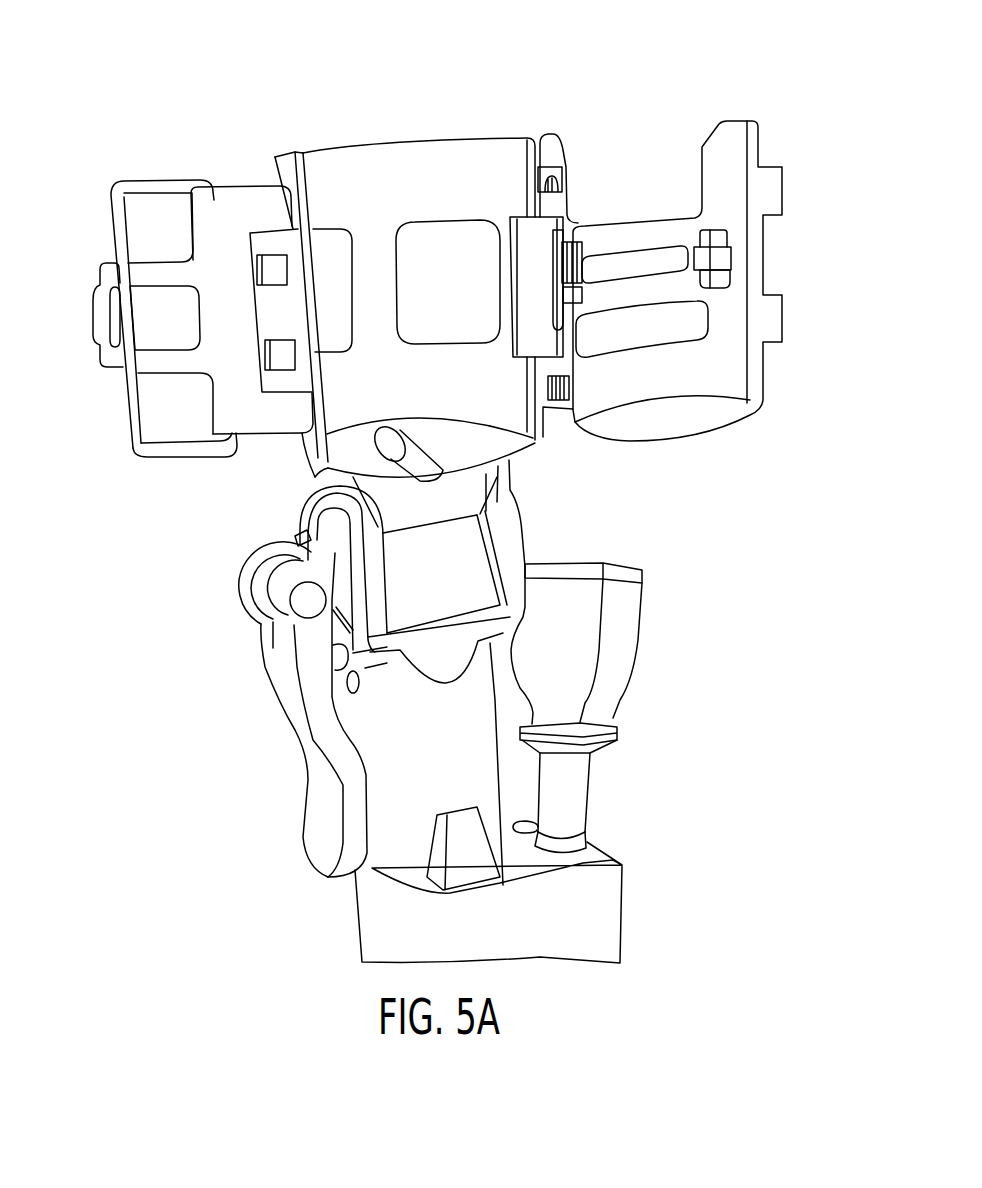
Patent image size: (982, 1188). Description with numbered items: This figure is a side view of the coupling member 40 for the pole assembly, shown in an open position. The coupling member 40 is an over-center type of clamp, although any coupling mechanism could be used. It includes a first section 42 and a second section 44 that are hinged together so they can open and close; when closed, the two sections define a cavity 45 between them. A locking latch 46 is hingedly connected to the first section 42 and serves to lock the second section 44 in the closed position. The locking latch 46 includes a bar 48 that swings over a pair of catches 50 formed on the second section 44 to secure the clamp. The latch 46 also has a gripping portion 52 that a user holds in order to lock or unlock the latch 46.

The coupling member 40 is at (600, 72).
The first section 42 is at (358, 158).
The second section 44 is at (733, 367).
The cavity 45 is at (478, 385).
The locking latch 46 is at (243, 205).
The bar 48 is at (135, 402).
The catches 50 is at (770, 190).
The gripping portion 52 is at (102, 273).